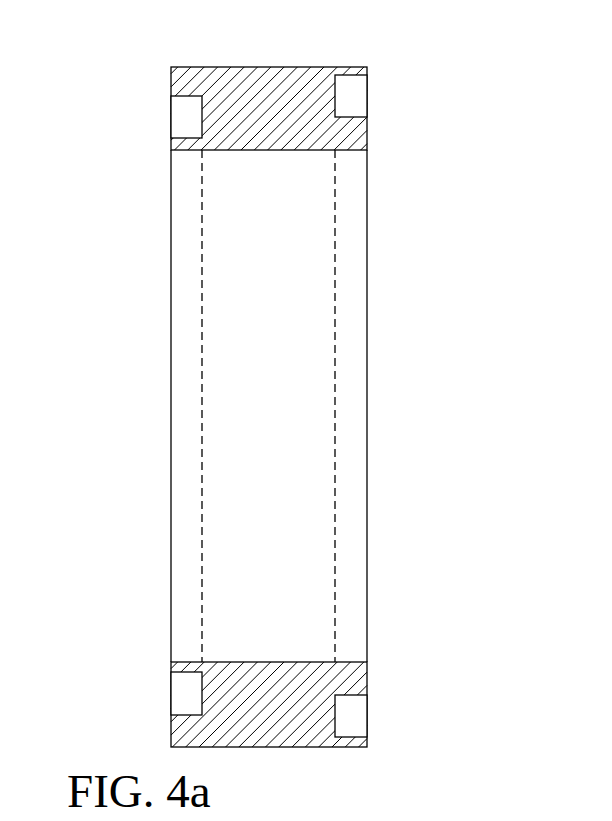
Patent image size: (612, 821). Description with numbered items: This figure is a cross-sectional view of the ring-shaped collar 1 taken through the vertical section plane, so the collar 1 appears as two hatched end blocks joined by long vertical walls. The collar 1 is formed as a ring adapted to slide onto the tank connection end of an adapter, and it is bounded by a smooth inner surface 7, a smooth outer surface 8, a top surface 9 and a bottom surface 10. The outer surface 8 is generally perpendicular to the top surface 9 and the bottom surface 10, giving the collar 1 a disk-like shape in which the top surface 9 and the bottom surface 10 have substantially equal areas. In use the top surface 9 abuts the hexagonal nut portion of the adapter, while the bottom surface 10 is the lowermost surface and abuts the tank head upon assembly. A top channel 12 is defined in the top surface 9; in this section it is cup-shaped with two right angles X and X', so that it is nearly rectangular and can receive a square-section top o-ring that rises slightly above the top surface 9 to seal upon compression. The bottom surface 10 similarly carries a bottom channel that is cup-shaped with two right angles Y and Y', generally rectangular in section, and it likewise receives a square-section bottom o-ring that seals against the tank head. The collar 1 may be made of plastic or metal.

The collar 1 is at (181, 66).
The inner surface 7 is at (275, 662).
The outer surface 8 is at (288, 66).
The top surface 9 is at (171, 88).
The bottom surface 10 is at (367, 143).
The top channel 12 is at (353, 97).
The right angle X is at (389, 51).
The right angle X' is at (421, 123).
The right angle Y is at (131, 127).
The right angle Y' is at (136, 165).